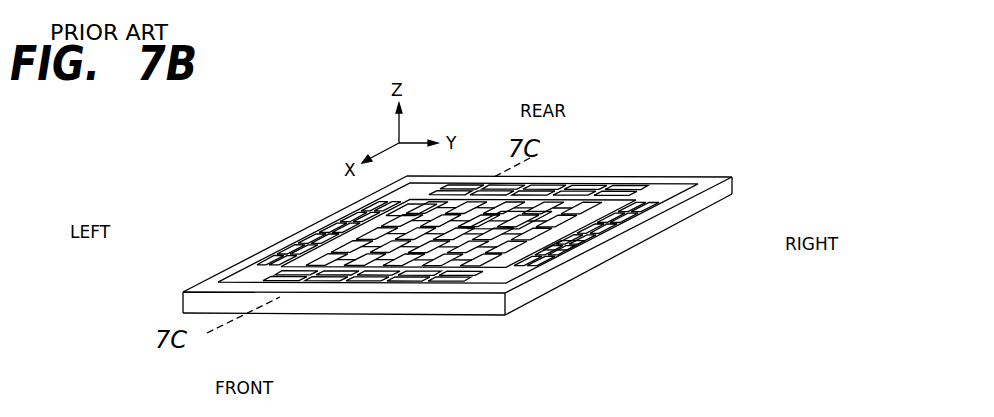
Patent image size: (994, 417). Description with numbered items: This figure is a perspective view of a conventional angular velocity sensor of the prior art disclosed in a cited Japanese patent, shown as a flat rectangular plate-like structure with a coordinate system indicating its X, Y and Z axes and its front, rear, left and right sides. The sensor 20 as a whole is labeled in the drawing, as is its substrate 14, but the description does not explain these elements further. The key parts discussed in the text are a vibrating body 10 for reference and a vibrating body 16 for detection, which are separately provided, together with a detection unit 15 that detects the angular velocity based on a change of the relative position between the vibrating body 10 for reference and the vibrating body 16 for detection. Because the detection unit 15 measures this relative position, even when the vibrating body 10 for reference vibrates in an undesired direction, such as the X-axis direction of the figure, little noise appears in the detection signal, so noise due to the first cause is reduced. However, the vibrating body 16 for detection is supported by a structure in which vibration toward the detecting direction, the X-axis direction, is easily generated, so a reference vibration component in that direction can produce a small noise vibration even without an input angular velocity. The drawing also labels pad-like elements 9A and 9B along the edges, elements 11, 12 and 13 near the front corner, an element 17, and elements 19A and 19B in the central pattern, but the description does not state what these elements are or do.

The outer electrode pads 9A is at (291, 253).
The inner electrode pads 9B is at (313, 226).
The vibrating body for reference 10 is at (560, 205).
The inner frame edge 11 is at (620, 178).
The top surface edge 12 is at (525, 294).
The side surface 13 is at (508, 303).
The substrate 14 is at (676, 178).
The detection unit 15 is at (518, 212).
The vibrating body for detection 16 is at (600, 244).
The rear-left conductor 17 is at (393, 210).
The front pads 19A is at (418, 300).
The rear pads 19B is at (500, 214).
The wiring board (prior art) 20 is at (686, 283).